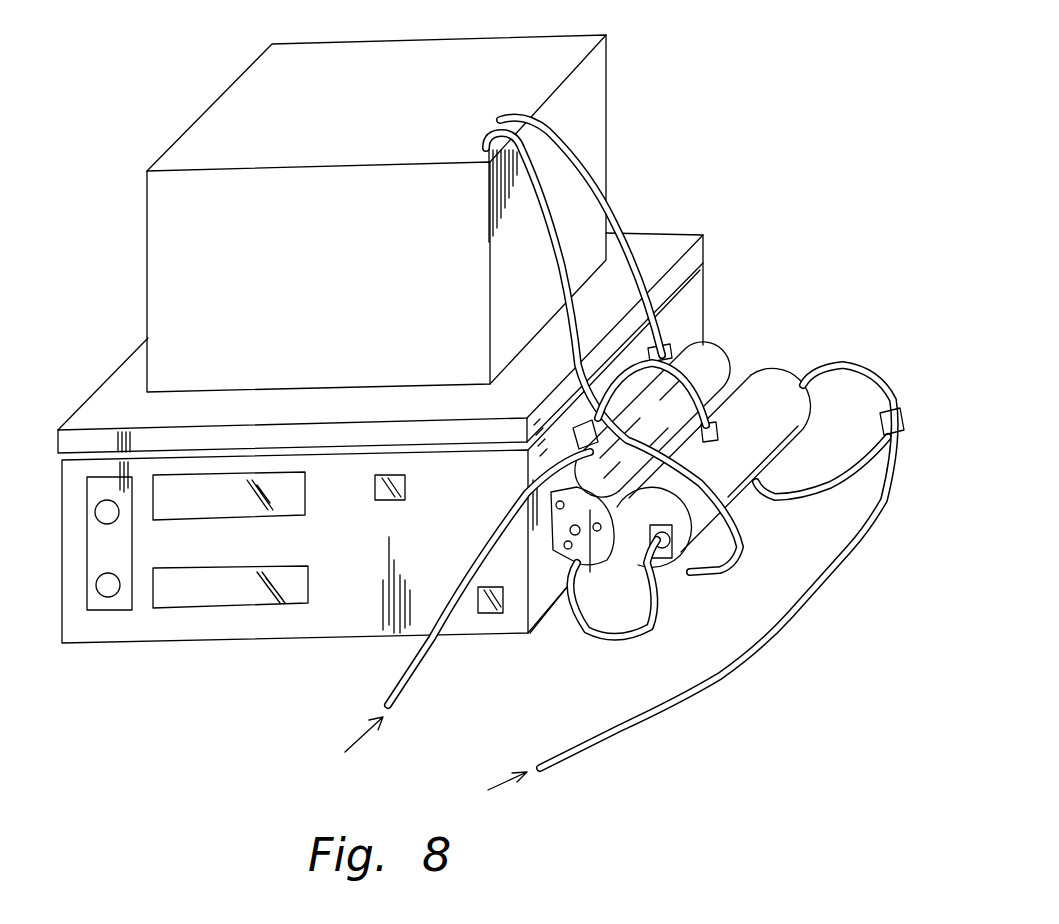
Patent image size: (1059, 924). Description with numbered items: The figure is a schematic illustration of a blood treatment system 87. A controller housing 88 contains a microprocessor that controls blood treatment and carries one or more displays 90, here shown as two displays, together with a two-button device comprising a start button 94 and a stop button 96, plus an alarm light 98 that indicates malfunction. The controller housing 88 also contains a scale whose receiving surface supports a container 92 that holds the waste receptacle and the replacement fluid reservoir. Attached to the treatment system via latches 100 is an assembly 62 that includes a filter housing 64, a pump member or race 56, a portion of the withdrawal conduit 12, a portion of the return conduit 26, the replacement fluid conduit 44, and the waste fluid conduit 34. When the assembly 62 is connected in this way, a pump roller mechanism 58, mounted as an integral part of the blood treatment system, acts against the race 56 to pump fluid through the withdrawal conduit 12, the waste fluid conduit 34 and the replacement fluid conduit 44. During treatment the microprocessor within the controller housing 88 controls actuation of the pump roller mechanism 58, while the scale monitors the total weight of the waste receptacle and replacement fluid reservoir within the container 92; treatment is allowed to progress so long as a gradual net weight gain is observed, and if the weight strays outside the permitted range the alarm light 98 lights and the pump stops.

The withdrawal conduit 12 is at (427, 670).
The return conduit 26 is at (846, 357).
The waste fluid conduit 34 is at (558, 268).
The replacement fluid conduit 44 is at (627, 215).
The pump member (race) 56 is at (610, 563).
The pump roller mechanism 58 is at (557, 614).
The assembly 62 is at (793, 330).
The filter housing 64 is at (804, 432).
The blood treatment system 87 is at (690, 108).
The controller housing 88 is at (228, 650).
The displays 90 is at (305, 510).
The container 92 is at (147, 257).
The start button 94 is at (95, 512).
The stop button 96 is at (96, 587).
The alarm light 98 is at (407, 493).
The latches 100 is at (548, 452).